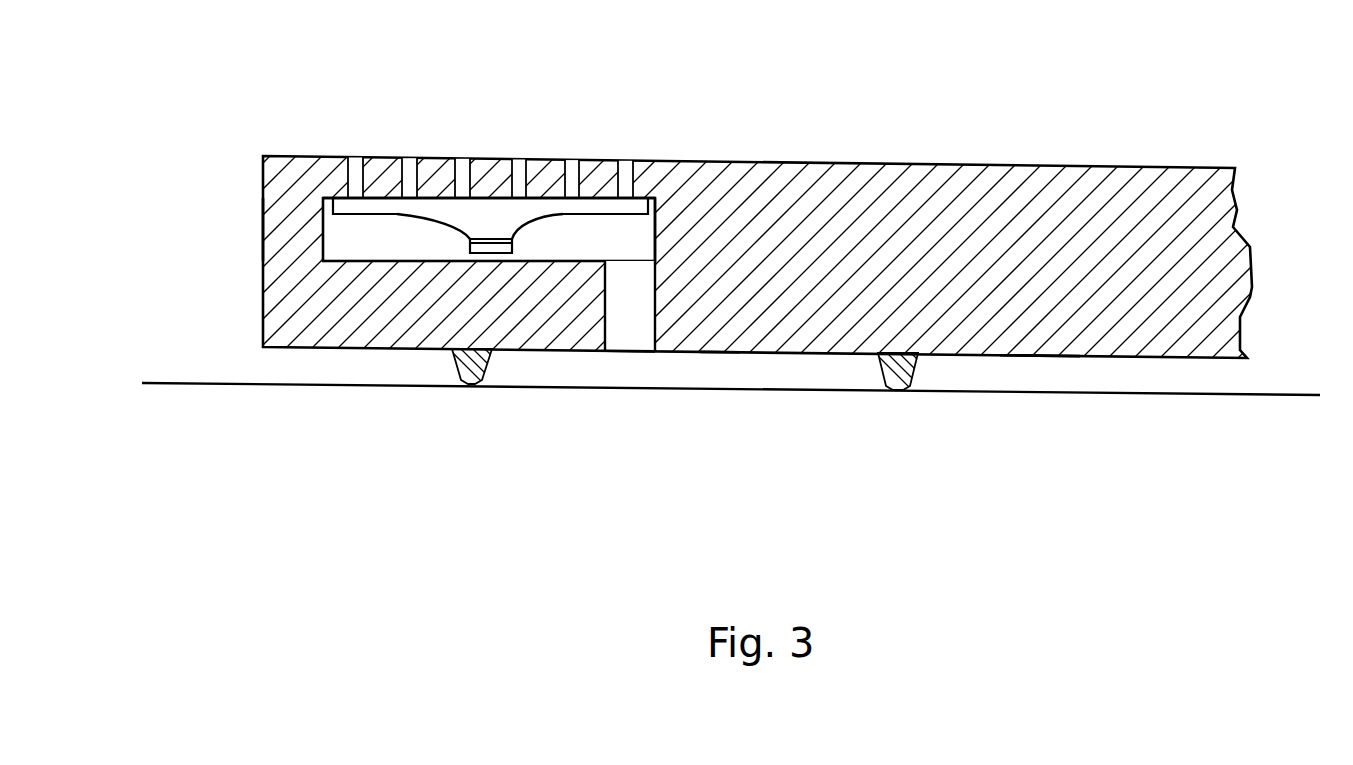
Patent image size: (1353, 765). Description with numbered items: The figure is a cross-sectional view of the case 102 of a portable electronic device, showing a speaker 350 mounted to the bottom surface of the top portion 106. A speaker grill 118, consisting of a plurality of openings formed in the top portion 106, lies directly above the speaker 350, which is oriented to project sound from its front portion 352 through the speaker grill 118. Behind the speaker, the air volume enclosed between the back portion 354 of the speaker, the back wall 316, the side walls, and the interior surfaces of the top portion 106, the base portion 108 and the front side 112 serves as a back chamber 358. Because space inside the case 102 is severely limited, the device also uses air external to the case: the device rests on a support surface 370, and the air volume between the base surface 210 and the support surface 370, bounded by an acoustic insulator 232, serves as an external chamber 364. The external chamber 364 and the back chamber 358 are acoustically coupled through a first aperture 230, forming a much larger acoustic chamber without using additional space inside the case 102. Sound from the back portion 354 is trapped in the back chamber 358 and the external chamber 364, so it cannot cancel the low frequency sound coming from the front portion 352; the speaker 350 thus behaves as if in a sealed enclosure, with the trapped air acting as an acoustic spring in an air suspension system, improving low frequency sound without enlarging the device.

The case 102 is at (1027, 165).
The top portion 106 is at (333, 188).
The base portion 108 is at (310, 313).
The front side 112 is at (263, 238).
The speaker grill 118 is at (466, 157).
The speaker 350 is at (442, 205).
The front portion 352 is at (411, 195).
The back portion 354 is at (405, 213).
The back chamber 358 is at (342, 228).
The back wall 316 is at (657, 220).
The first aperture 230 is at (627, 328).
The acoustic insulator 232 is at (488, 372).
The external chamber 364 is at (720, 373).
The base surface 210 is at (1040, 357).
The support surface 370 is at (1262, 395).